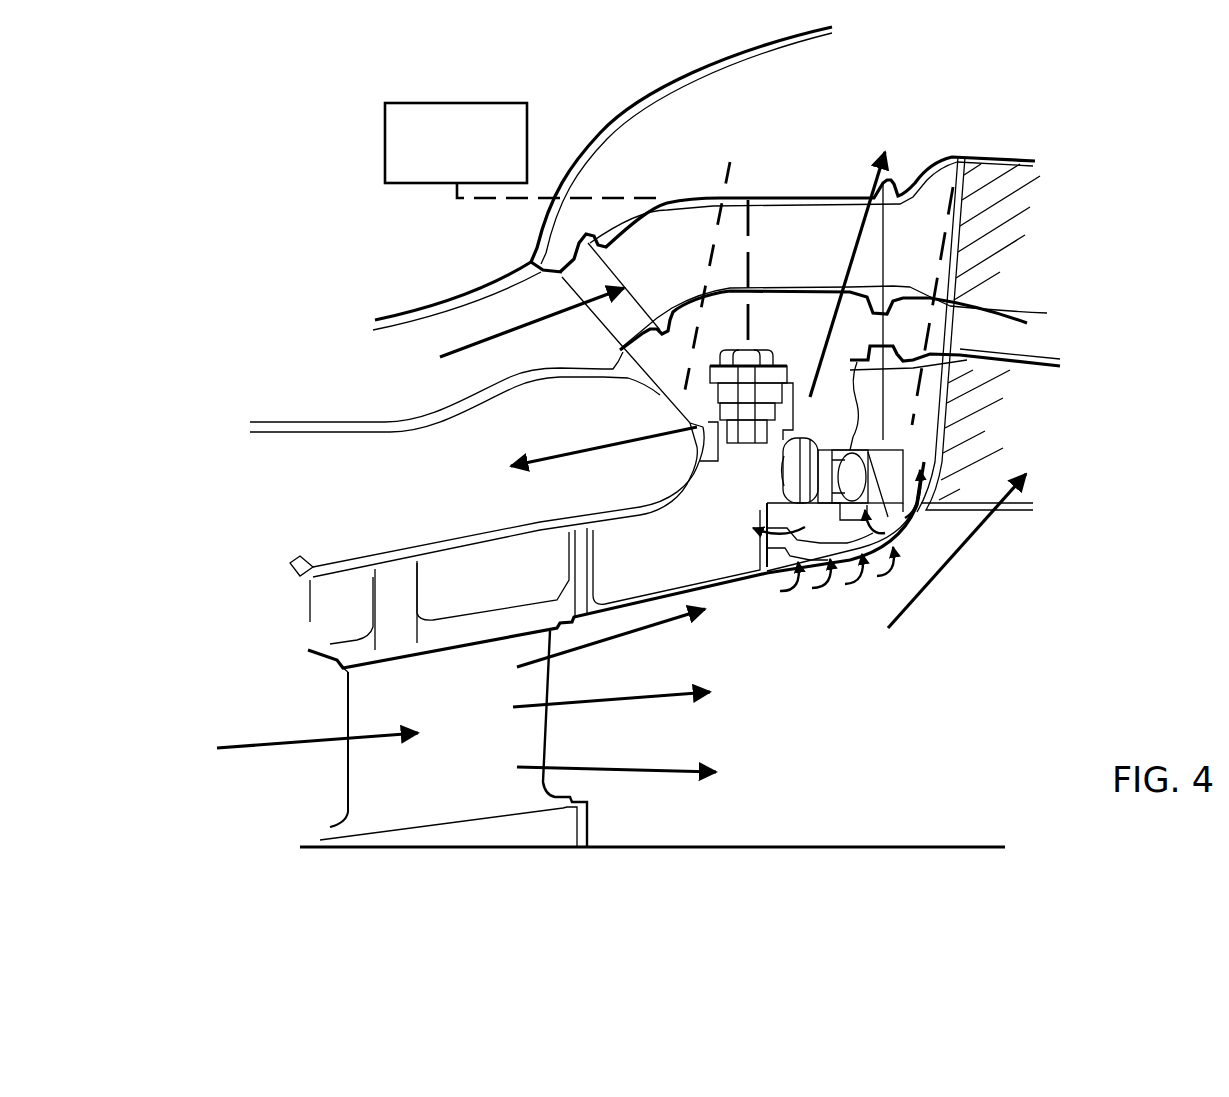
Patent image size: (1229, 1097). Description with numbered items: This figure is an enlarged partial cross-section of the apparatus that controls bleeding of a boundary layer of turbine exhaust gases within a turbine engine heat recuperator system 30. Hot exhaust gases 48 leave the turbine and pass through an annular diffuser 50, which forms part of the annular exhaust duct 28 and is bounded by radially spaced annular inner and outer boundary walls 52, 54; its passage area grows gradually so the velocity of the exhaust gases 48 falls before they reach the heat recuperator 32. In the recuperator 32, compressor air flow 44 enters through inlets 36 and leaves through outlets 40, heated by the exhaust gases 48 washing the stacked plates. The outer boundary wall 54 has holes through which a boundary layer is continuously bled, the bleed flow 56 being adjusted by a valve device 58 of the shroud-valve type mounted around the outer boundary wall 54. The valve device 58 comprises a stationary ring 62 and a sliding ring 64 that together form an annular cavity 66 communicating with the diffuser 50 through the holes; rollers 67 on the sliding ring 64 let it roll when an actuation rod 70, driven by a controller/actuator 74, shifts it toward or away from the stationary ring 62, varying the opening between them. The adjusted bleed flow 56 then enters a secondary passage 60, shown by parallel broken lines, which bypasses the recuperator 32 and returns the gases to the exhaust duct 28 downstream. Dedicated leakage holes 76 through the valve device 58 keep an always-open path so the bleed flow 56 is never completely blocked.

The annular exhaust duct 28 is at (786, 126).
The turbine engine heat recuperator system 30 is at (639, 87).
The heat recuperator 32 is at (1017, 153).
The inlets 36 is at (937, 180).
The outlets 40 is at (922, 432).
The compressor air flow 44 is at (488, 337).
The hot exhaust gases 48 is at (653, 697).
The annular diffuser 50 is at (890, 740).
The inner boundary wall 52 is at (770, 847).
The outer boundary wall 54 is at (685, 590).
The continuous bleed flow 56 is at (857, 222).
The valve device 58 is at (857, 450).
The secondary passage 60 is at (723, 178).
The stationary ring 62 is at (767, 560).
The sliding ring 64 is at (853, 543).
The annular cavity 66 is at (853, 542).
The rollers 67 is at (797, 477).
The actuation rod 70 is at (760, 350).
The controller/actuator 74 is at (383, 142).
The dedicated leakage holes 76 is at (767, 510).